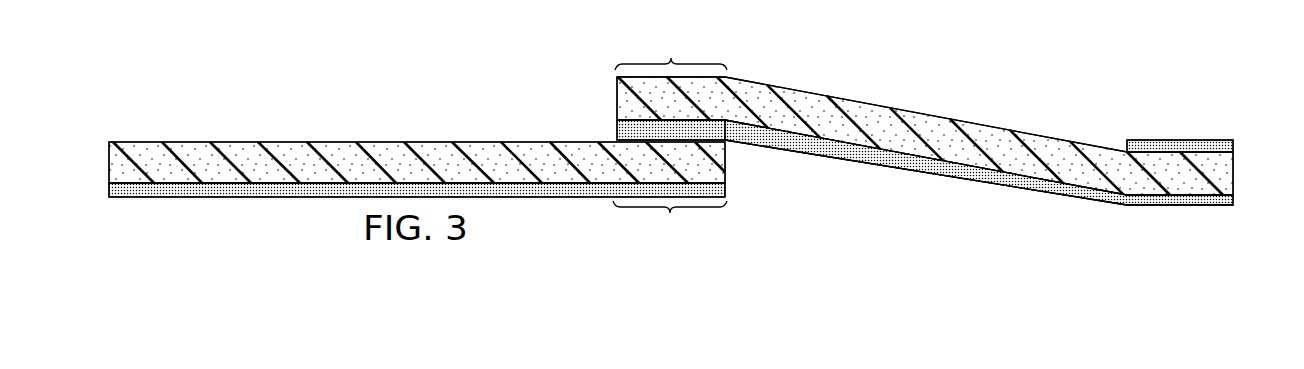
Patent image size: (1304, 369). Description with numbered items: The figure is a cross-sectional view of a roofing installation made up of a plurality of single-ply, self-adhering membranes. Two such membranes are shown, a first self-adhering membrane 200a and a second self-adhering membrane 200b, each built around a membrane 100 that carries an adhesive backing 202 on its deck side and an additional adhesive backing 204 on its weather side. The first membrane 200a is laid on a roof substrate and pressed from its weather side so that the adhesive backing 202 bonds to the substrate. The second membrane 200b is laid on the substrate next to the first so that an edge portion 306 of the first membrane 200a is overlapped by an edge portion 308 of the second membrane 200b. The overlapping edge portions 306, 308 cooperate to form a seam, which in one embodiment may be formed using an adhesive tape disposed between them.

The membrane 100 is at (109, 158).
The adhesive backing 202 is at (727, 190).
The additional adhesive backing 204 is at (617, 135).
The edge portion 306 is at (670, 225).
The edge portion 308 is at (671, 48).
The self-adhering membrane 200a is at (325, 77).
The self-adhering membrane 200b is at (1038, 215).